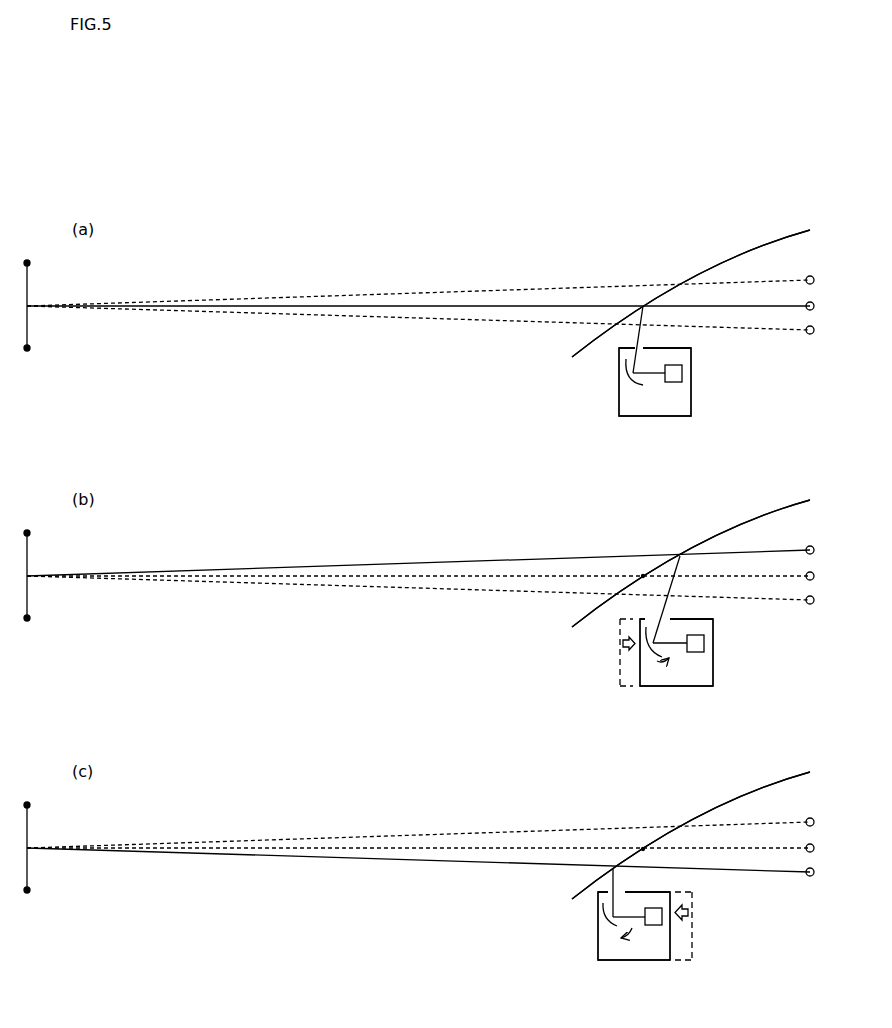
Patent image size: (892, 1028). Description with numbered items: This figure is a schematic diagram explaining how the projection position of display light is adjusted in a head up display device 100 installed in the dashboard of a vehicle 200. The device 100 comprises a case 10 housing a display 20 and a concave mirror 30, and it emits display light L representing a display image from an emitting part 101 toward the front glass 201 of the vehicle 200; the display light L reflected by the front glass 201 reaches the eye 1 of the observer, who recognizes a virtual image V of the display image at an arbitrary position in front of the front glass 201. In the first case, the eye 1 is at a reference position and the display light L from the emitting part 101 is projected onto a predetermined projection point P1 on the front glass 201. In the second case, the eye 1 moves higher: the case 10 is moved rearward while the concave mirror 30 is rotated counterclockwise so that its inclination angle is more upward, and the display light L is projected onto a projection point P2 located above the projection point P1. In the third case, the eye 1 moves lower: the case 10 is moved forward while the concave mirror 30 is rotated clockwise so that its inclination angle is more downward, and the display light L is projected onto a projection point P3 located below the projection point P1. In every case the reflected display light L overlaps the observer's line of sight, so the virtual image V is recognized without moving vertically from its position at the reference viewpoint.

The eye 1 is at (807, 300).
The case 10 is at (653, 417).
The display 20 is at (682, 375).
The concave mirror 30 is at (632, 380).
The head up display device 100 is at (700, 408).
The emitting part 101 is at (643, 342).
The vehicle 200 is at (768, 232).
The front glass 201 is at (734, 257).
The virtual image V is at (30, 272).
The display light L is at (732, 308).
The projection point P1 is at (643, 306).
The projection point P2 is at (680, 556).
The projection point P3 is at (613, 868).